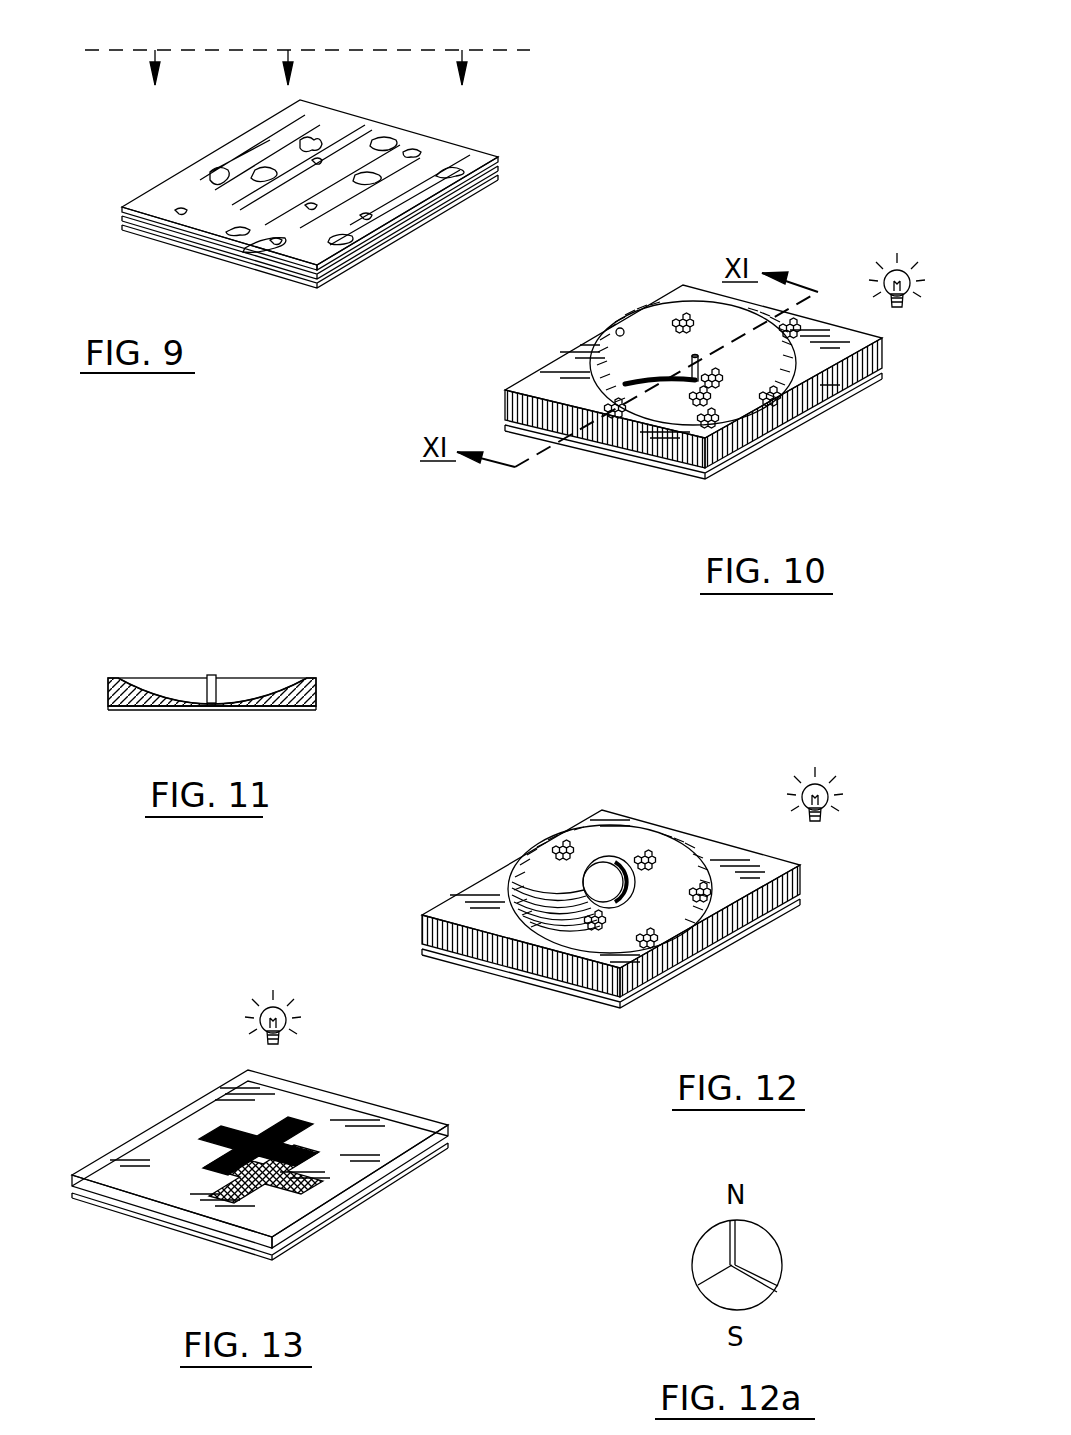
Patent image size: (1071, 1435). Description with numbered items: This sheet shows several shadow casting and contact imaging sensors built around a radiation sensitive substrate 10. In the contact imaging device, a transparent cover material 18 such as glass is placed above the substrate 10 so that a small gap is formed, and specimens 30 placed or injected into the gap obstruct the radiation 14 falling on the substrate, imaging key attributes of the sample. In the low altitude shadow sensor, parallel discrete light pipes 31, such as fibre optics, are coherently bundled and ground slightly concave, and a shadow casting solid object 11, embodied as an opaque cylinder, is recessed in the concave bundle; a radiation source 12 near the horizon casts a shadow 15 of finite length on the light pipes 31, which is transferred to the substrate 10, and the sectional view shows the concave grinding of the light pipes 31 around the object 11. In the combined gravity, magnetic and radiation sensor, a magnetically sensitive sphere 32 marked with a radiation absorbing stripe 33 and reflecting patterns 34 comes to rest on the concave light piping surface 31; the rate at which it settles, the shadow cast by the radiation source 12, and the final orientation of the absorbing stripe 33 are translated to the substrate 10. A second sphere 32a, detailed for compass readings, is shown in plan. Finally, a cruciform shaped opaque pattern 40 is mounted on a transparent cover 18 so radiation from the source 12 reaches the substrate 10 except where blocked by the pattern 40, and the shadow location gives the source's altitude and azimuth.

In FIG. 9, the radiation sensitive substrate 10 is at (122, 232).
In FIG. 10, the radiation sensitive substrate 10 is at (703, 481).
In FIG. 11, the radiation sensitive substrate 10 is at (108, 709).
In FIG. 12, the radiation sensitive substrate 10 is at (733, 938).
In FIG. 13, the radiation sensitive substrate 10 is at (377, 1195).
In FIG. 10, the shadow casting solid object 11 is at (695, 355).
In FIG. 11, the shadow casting solid object 11 is at (212, 675).
In FIG. 10, the radiation source 12 is at (884, 268).
In FIG. 12, the radiation source 12 is at (803, 787).
In FIG. 13, the radiation source 12 is at (266, 1007).
In FIG. 9, the radiation 14 is at (320, 51).
In FIG. 10, the shadow 15 is at (632, 380).
In FIG. 9, the transparent cover material 18 is at (145, 196).
In FIG. 13, the transparent cover material 18 is at (377, 1117).
In FIG. 9, the specimens 30 is at (120, 221).
In FIG. 10, the light pipes 31 is at (787, 377).
In FIG. 11, the light pipes 31 is at (275, 692).
In FIG. 12, the light pipes 31 is at (572, 833).
In FIG. 12, the magnetically sensitive sphere 32 is at (533, 858).
In FIG. 12A, the second sphere 32a is at (713, 1243).
In FIG. 12, the radiation absorbing stripe 33 is at (607, 860).
In FIG. 12A, the radiation absorbing stripe 33 is at (757, 1272).
In FIG. 12, the reflecting patterns 34 is at (655, 872).
In FIG. 13, the cruciform shaped opaque pattern 40 is at (223, 1135).